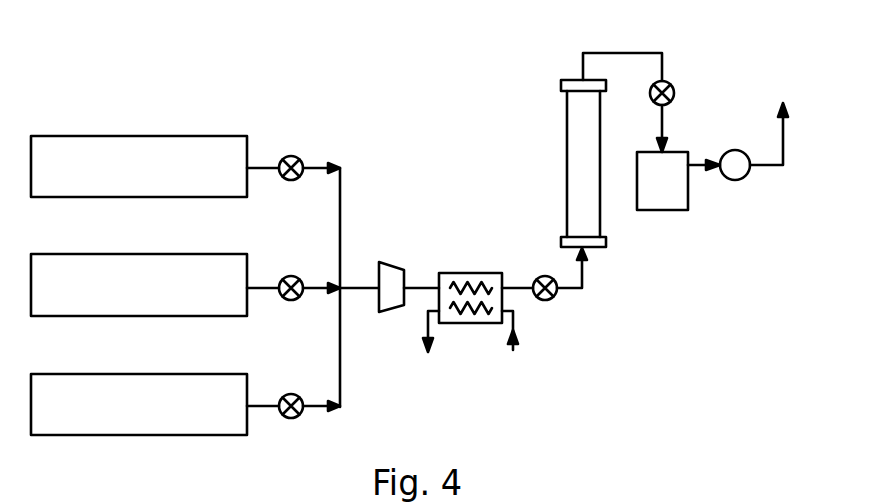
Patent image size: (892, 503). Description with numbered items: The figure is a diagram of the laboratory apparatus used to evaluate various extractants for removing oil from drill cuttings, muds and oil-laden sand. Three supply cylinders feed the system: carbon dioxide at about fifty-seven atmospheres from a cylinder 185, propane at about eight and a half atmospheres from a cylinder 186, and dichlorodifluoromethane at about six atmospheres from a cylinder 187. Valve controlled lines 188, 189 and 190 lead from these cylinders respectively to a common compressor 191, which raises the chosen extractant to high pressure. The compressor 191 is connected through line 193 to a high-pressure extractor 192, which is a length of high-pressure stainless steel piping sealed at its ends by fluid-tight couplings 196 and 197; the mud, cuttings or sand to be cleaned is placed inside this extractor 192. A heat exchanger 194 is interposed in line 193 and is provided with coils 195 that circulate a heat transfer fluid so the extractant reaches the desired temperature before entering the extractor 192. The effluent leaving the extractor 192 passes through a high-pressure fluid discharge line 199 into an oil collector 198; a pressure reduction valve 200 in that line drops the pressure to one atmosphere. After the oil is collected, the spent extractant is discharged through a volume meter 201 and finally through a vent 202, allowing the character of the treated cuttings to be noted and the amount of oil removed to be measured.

The cylinder 185 is at (50, 143).
The cylinder 186 is at (50, 265).
The cylinder 187 is at (58, 373).
The valve controlled line 188 is at (263, 165).
The valve controlled line 189 is at (263, 283).
The valve controlled line 190 is at (260, 402).
The compressor 191 is at (390, 273).
The high-pressure extractor 192 is at (577, 178).
The line 193 is at (520, 290).
The heat exchanger 194 is at (462, 273).
The coils 195 is at (470, 312).
The fluid-tight coupling 196 is at (592, 242).
The fluid-tight coupling 197 is at (573, 85).
The oil collector 198 is at (665, 205).
The high-pressure fluid discharge line 199 is at (642, 53).
The pressure reduction valve 200 is at (673, 95).
The volume meter 201 is at (738, 173).
The vent 202 is at (782, 135).